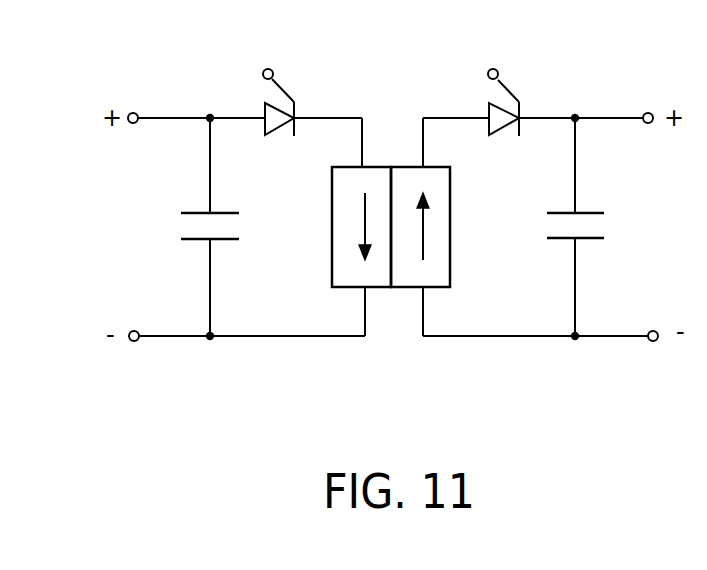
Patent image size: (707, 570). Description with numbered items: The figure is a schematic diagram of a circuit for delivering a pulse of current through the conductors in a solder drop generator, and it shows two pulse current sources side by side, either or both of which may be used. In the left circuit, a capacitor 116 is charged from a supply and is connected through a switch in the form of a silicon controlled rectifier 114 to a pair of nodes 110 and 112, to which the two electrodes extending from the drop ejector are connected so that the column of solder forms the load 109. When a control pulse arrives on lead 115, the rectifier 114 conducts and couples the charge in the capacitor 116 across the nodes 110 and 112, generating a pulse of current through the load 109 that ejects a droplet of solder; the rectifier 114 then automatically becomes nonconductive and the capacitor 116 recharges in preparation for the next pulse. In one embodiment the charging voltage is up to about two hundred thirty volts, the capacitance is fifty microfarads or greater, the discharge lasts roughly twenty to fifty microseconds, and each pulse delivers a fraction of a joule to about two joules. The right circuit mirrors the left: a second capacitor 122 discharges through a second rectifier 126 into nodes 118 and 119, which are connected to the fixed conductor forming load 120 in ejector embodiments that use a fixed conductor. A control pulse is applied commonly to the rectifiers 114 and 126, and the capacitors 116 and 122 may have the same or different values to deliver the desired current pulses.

The load 109 is at (340, 198).
The node 110 is at (365, 165).
The node 112 is at (365, 290).
The silicon controlled rectifier 114 is at (263, 113).
The lead 115 is at (282, 93).
The capacitor 116 is at (198, 213).
The node 118 is at (421, 165).
The node 119 is at (425, 290).
The load 120 is at (440, 248).
The capacitor 122 is at (585, 212).
The rectifier 126 is at (520, 112).